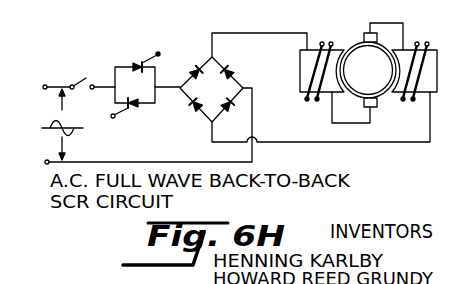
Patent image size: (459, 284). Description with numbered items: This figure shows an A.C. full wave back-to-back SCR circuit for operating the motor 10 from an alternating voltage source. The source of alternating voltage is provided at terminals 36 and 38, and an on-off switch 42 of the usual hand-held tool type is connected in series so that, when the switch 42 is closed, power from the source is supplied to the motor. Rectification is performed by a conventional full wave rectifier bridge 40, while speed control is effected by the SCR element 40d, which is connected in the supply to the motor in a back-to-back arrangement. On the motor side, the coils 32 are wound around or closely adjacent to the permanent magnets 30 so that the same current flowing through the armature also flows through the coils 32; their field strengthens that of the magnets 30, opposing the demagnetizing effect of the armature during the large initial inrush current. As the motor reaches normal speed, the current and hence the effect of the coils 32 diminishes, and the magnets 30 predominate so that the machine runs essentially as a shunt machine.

The motor 10 is at (378, 77).
The permanent magnets 30 is at (428, 93).
The coils 32 is at (322, 43).
The terminal 36 is at (43, 88).
The terminal 38 is at (45, 162).
The full wave rectifier bridge 40 is at (207, 52).
The SCR element 40d is at (138, 63).
The on-off switch 42 is at (76, 81).